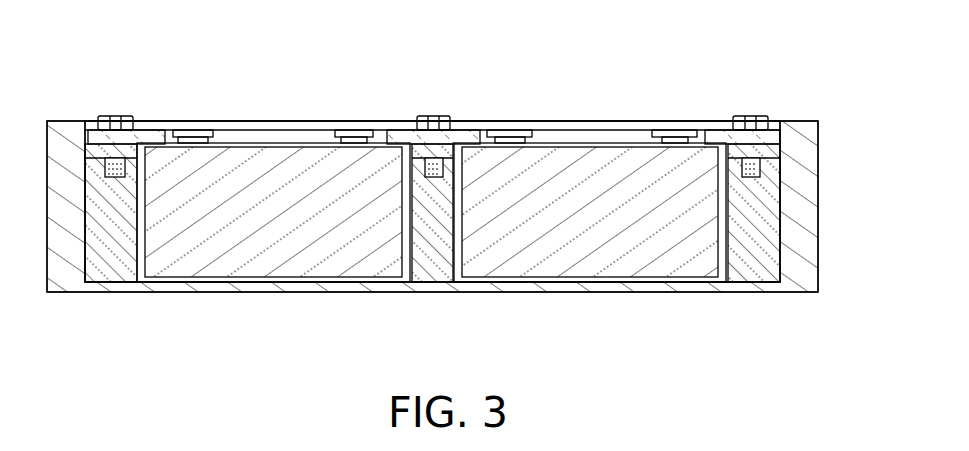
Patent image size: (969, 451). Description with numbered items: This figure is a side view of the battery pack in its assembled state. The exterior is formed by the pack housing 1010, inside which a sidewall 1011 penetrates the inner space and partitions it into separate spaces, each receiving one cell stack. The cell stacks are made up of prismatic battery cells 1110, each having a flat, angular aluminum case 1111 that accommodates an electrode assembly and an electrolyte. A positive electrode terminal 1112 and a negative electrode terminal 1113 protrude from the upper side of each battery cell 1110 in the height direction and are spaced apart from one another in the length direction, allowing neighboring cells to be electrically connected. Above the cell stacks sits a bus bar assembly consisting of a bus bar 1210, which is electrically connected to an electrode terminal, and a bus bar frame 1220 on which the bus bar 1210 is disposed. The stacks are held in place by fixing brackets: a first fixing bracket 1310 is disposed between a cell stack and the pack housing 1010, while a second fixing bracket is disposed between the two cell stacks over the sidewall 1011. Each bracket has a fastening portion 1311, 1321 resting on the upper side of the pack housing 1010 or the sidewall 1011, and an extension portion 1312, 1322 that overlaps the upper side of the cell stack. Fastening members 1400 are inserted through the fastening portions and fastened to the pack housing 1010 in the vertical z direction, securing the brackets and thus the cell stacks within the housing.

The pack housing 1010 is at (797, 262).
The sidewall 1011 is at (750, 265).
The prismatic battery cell 1110 is at (290, 280).
The case 1111 is at (503, 262).
The positive electrode terminal 1112 is at (508, 132).
The negative electrode terminal 1113 is at (673, 130).
The bus bar 1210 is at (520, 130).
The bus bar frame 1220 is at (632, 121).
The first fixing bracket 1310 is at (80, 155).
The fastening portion 1311 is at (100, 150).
The extension portion 1312 is at (150, 130).
The fastening portion 1321 is at (428, 117).
The extension portion 1322 is at (403, 130).
The fastening member 1400 is at (113, 116).